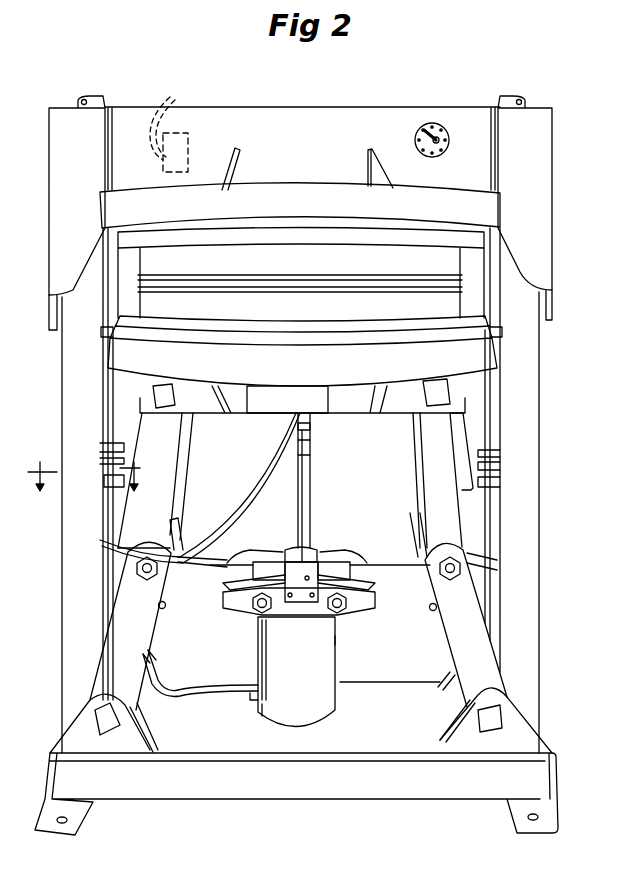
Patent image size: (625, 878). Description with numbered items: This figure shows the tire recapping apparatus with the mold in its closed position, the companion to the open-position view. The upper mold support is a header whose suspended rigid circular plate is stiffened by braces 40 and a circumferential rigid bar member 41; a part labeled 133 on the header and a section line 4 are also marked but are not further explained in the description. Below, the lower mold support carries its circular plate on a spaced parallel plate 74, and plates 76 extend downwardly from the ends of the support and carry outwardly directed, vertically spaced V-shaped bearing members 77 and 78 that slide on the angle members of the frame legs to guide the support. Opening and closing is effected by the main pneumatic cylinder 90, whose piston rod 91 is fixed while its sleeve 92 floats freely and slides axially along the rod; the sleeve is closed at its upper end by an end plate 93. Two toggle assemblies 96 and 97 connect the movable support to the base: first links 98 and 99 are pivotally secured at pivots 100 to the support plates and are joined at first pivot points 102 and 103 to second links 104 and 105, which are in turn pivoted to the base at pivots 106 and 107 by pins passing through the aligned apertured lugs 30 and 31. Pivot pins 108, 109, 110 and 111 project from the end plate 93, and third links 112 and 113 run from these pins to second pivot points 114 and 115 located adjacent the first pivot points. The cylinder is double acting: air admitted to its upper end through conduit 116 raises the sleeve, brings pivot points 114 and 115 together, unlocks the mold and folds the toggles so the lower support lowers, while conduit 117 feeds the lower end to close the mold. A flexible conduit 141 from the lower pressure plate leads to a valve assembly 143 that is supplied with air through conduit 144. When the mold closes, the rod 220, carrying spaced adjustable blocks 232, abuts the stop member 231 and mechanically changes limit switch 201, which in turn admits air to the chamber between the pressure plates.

The section line 4 is at (84, 486).
The apertured lug 30 is at (160, 682).
The apertured lug 31 is at (158, 672).
The braces 40 is at (378, 160).
The circumferential rigid bar member 41 is at (265, 191).
The plate 74 is at (357, 409).
The plates 76 is at (128, 437).
The V-shaped bearing member 77 is at (106, 448).
The V-shaped bearing member 78 is at (103, 331).
The main pneumatic cylinder 90 is at (336, 640).
The piston rod 91 is at (311, 479).
The sleeve 92 is at (337, 660).
The end plate 93 is at (290, 538).
The toggle assembly 96 is at (181, 480).
The toggle assembly 97 is at (432, 448).
The first link 98 is at (185, 452).
The first link 99 is at (190, 428).
The pivot 100 is at (175, 396).
The first pivot point 102 is at (147, 582).
The first pivot point 103 is at (180, 531).
The second link 104 is at (161, 630).
The second link 105 is at (240, 560).
The pivot 106 is at (96, 724).
The pivot 107 is at (159, 667).
The pivot pin 108 is at (248, 610).
The pivot pin 109 is at (278, 558).
The pivot pin 110 is at (341, 553).
The pivot pin 111 is at (343, 612).
The third link 112 is at (240, 556).
The third link 113 is at (391, 565).
The second pivot point 114 is at (166, 607).
The pivot point 115 is at (436, 610).
The conduit 116 is at (262, 637).
The conduit 117 is at (226, 697).
The housing 133 is at (341, 113).
The flexible conduit 141 is at (250, 494).
The valve assembly 143 is at (190, 142).
The conduit 144 is at (172, 103).
The limit switch 201 is at (286, 410).
The rod 220 is at (312, 445).
The stop member 231 is at (317, 582).
The adjustable positioned blocks 232 is at (313, 428).